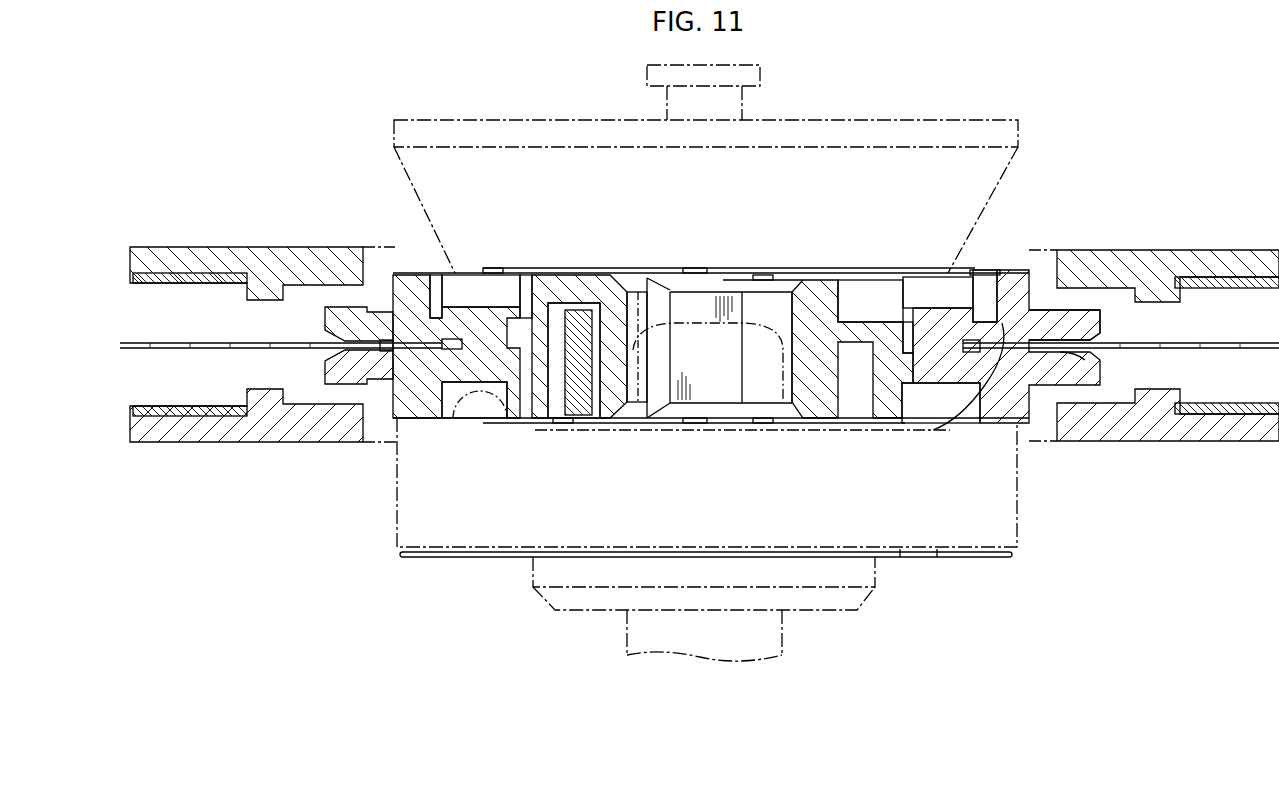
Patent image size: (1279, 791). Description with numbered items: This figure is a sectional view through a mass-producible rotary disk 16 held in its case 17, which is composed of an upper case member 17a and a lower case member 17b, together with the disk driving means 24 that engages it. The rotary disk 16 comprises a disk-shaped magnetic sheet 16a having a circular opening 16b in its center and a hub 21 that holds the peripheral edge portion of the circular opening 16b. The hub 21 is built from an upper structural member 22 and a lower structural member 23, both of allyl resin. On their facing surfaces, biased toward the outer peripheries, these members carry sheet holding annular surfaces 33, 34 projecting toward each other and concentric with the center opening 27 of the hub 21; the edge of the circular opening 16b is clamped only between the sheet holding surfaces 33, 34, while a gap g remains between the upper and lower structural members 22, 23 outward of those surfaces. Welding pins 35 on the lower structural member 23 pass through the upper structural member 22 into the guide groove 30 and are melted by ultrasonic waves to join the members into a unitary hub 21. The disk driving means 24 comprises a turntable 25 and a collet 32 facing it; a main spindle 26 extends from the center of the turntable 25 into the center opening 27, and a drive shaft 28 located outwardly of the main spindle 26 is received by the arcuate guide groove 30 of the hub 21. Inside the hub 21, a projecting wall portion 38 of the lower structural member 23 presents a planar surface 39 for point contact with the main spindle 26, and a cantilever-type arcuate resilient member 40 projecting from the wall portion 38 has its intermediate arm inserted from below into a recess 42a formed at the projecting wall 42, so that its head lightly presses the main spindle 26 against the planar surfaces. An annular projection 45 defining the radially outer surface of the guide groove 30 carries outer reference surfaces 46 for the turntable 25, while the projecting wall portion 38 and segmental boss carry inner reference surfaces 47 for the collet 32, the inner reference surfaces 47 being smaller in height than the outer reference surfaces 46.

The rotary disk 16 is at (1225, 343).
The magnetic sheet 16a is at (247, 343).
The circular opening 16b is at (452, 349).
The case 17 is at (289, 247).
The upper case member 17a is at (1147, 248).
The lower case member 17b is at (1165, 446).
The hub 21 is at (393, 295).
The upper structural member 22 is at (325, 318).
The lower structural member 23 is at (325, 383).
The disk driving means 24 is at (1020, 464).
The turntable 25 is at (397, 470).
The main spindle 26 is at (736, 335).
The center opening 27 is at (765, 298).
The drive shaft 28 is at (503, 416).
The arcuate guide groove 30 is at (447, 419).
The collet 32 is at (993, 195).
The sheet holding annular surface 33 is at (1095, 333).
The sheet holding annular surface 34 is at (953, 389).
The welding pin 35 is at (474, 308).
The projecting wall portion 38 is at (823, 283).
The planar surface 39 is at (721, 292).
The arcuate resilient member 40 is at (574, 318).
The projecting wall 42 is at (604, 292).
The recess 42a is at (555, 402).
The annular projection 45 is at (1003, 424).
The outer reference surface 46 is at (660, 423).
The inner reference surface 47 is at (527, 268).
The gap g is at (1088, 353).